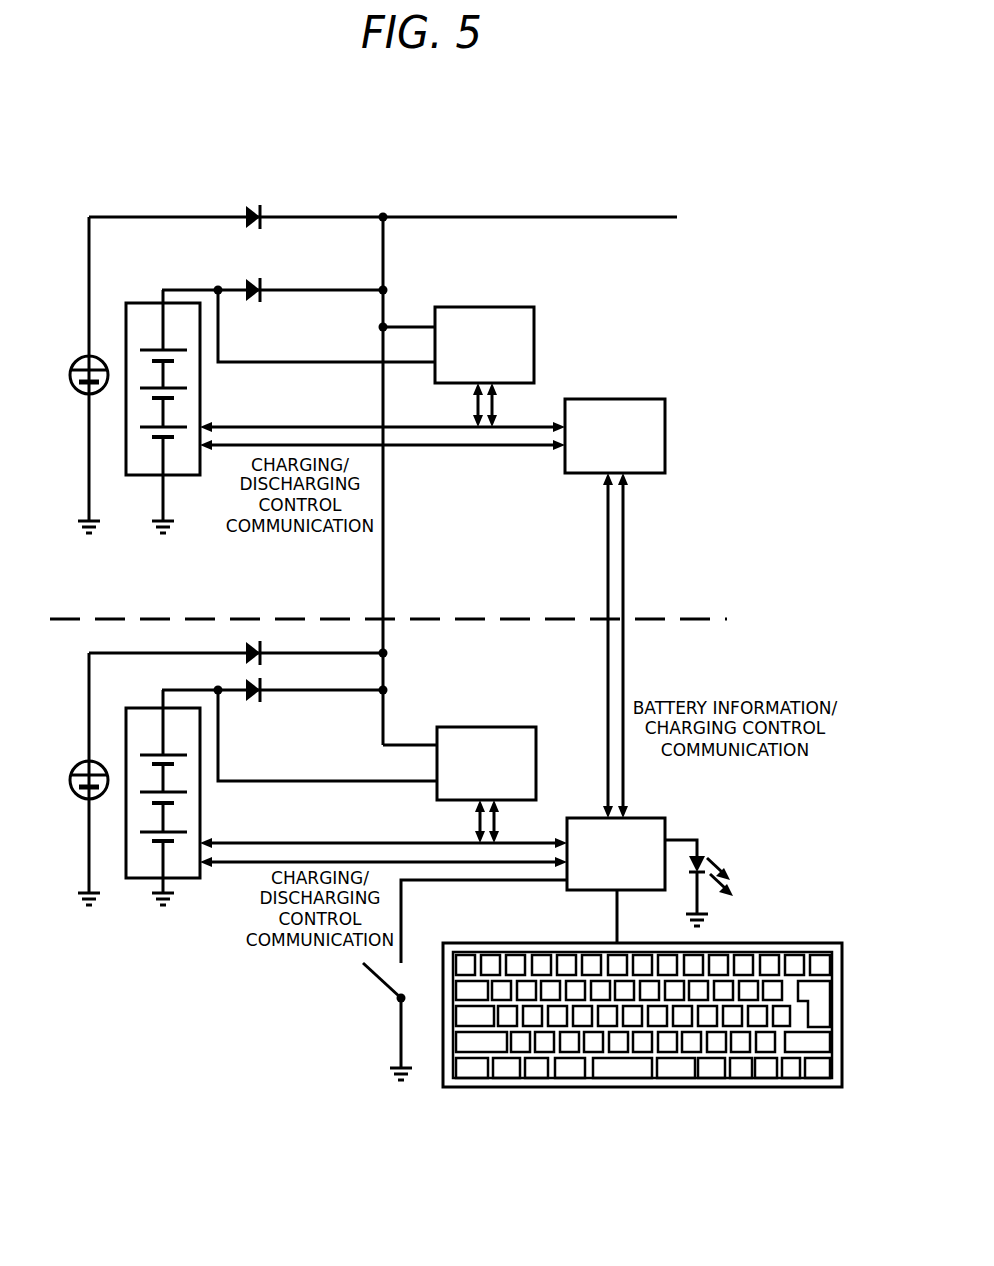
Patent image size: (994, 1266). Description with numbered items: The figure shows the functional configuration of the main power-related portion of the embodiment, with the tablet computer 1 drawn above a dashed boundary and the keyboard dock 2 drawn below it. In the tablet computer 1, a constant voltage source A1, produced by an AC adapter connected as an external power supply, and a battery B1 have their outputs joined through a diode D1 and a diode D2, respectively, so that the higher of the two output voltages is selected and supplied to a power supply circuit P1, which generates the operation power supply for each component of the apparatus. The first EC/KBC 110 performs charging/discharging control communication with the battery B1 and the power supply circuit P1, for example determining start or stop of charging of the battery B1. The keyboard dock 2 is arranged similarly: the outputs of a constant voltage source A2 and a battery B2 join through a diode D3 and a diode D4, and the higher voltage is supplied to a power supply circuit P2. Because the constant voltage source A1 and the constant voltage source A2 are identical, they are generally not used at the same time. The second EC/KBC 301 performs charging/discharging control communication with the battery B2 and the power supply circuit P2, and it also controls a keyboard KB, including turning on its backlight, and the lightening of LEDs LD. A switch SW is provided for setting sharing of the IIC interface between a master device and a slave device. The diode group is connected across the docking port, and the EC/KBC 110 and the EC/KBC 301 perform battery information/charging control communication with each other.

The diode D1 is at (261, 212).
The diode D2 is at (261, 285).
The diode D3 is at (262, 648).
The diode D4 is at (261, 696).
The power supply circuit P1 is at (535, 333).
The power supply circuit P2 is at (476, 727).
The constant voltage source A1 is at (83, 392).
The constant voltage source A2 is at (83, 797).
The battery B1 is at (187, 477).
The battery B2 is at (187, 880).
The EC/KBC 110 is at (567, 475).
The EC/KBC 301 is at (665, 818).
The tablet computer 1 is at (733, 547).
The keyboard dock 2 is at (733, 681).
The LEDs LD is at (708, 860).
The keyboard KB is at (745, 943).
The switch SW is at (370, 978).